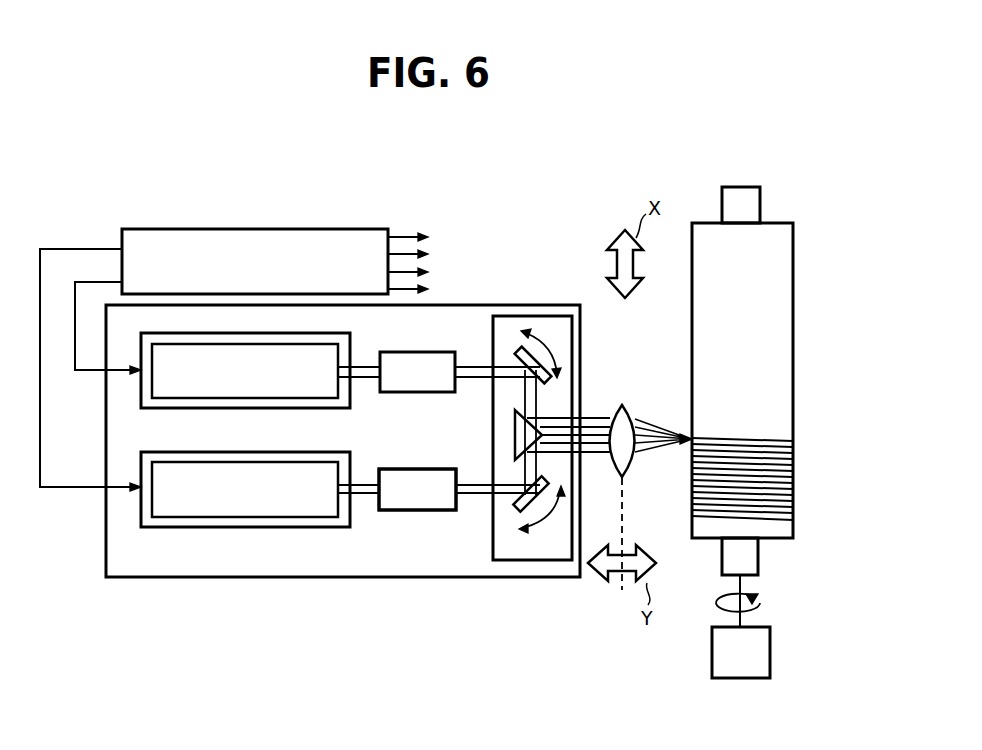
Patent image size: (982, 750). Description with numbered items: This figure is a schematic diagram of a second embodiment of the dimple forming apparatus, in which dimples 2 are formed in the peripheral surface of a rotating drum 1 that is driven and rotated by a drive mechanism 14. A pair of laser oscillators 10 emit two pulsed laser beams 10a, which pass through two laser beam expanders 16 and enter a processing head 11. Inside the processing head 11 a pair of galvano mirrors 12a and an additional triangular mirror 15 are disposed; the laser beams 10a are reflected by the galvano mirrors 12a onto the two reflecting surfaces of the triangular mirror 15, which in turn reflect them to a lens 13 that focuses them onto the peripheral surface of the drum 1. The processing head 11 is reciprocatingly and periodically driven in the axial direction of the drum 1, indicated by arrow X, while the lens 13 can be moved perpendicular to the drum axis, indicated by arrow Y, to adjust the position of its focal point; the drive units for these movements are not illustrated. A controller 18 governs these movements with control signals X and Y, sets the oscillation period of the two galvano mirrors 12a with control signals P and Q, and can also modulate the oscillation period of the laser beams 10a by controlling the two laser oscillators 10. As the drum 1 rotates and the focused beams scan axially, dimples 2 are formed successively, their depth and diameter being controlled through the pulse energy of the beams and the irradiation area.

The drum 1 is at (793, 355).
The dimples 2 is at (698, 436).
The laser oscillators 10 is at (203, 398).
The laser beams 10a is at (374, 356).
The processing head 11 is at (532, 561).
The galvano mirrors 12a is at (520, 350).
The lens 13 is at (630, 404).
The drive mechanism 14 is at (766, 661).
The triangular mirror 15 is at (514, 437).
The laser beam expanders 16 is at (399, 468).
The controller 18 is at (331, 232).